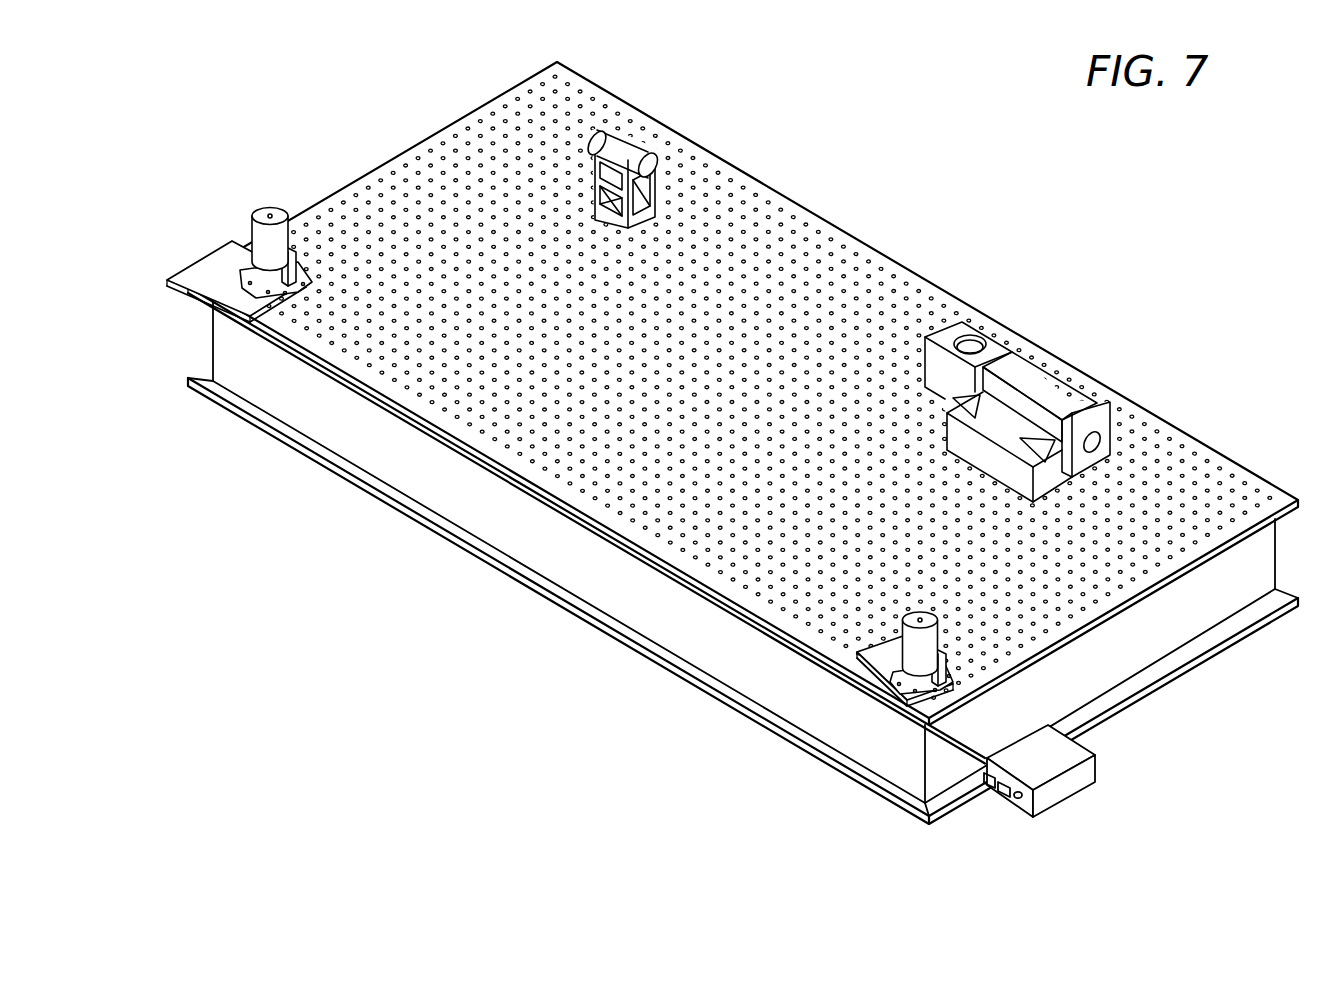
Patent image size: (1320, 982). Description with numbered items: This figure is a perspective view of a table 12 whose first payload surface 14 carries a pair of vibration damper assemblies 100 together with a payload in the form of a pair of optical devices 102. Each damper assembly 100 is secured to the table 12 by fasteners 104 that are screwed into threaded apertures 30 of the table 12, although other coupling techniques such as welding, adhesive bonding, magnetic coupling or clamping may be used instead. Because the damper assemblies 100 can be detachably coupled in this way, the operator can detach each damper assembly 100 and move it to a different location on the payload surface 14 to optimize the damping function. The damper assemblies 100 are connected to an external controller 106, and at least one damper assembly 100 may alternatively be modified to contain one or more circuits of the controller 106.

The table 12 is at (468, 495).
The first payload surface 14 is at (453, 414).
The threaded apertures 30 is at (718, 574).
The vibration damper assembly 100 is at (272, 242).
The optical devices 102 is at (620, 152).
The fasteners 104 is at (250, 270).
The controller 106 is at (1045, 758).